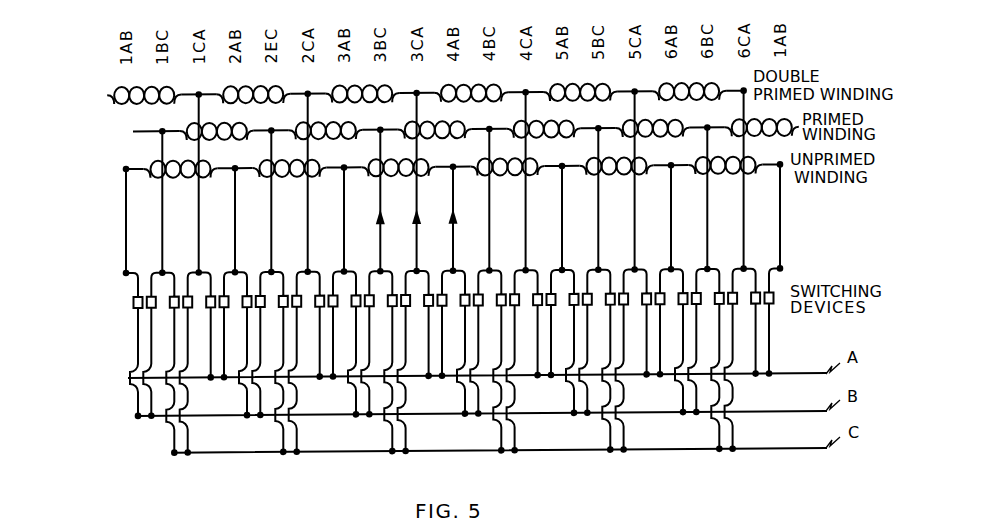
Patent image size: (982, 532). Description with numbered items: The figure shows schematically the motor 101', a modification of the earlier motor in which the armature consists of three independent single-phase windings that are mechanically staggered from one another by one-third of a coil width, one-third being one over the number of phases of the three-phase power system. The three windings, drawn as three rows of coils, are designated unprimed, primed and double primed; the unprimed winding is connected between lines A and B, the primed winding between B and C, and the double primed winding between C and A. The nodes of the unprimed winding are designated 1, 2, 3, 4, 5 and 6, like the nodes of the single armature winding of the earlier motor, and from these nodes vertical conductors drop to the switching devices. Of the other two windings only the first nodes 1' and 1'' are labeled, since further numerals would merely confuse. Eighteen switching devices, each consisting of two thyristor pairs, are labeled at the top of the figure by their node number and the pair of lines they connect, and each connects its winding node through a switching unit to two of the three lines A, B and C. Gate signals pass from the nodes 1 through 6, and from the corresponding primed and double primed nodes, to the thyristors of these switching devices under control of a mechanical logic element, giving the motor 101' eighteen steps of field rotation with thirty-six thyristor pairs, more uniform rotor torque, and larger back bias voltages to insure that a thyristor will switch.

The motor 101' is at (416, 127).
The node of the unprimed winding 1 is at (431, 178).
The first node of the primed winding 1' is at (452, 130).
The first node of the double primed winding 1'' is at (427, 83).
The node of the unprimed winding 2 is at (234, 170).
The node of the unprimed winding 3 is at (343, 170).
The node of the unprimed winding 4 is at (452, 168).
The node of the unprimed winding 5 is at (561, 168).
The node of the unprimed winding 6 is at (670, 167).